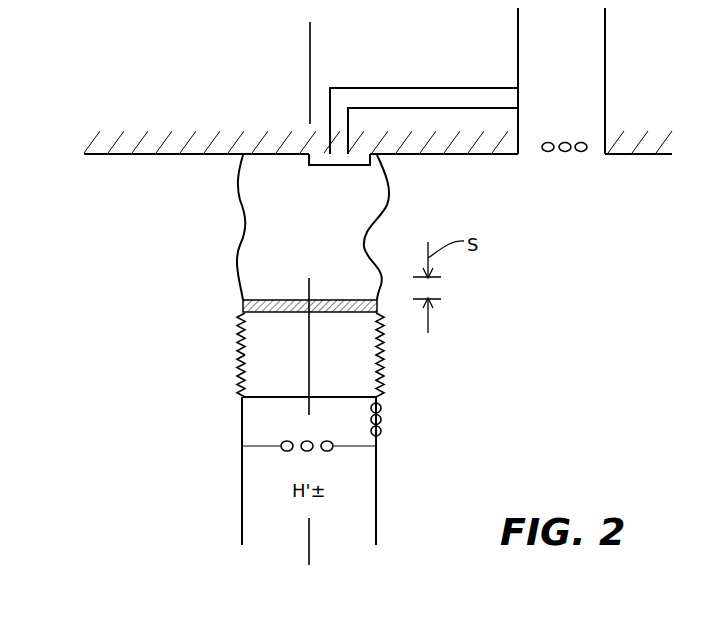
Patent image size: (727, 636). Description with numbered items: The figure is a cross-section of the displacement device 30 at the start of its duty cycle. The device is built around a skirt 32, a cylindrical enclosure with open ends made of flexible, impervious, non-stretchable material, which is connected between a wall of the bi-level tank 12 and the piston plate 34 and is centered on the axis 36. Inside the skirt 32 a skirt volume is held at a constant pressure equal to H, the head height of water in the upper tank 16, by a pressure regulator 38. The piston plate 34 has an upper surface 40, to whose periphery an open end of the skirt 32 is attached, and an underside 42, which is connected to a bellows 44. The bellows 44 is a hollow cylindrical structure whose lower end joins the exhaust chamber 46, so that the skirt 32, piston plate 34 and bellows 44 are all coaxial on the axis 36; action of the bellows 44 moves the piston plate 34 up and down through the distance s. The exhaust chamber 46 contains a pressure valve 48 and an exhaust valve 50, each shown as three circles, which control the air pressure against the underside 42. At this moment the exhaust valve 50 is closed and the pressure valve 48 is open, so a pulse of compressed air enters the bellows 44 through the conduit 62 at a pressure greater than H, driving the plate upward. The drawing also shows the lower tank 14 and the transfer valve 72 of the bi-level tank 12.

The bi-level tank 12 is at (182, 148).
The lower tank 14 is at (585, 248).
The upper tank 16 is at (571, 50).
The displacement device 30 is at (110, 260).
The skirt 32 is at (243, 222).
The piston plate 34 is at (243, 307).
The axis 36 is at (308, 65).
The pressure regulator 38 is at (340, 156).
The upper surface 40 is at (243, 283).
The underside 42 is at (340, 313).
The bellows 44 is at (243, 360).
The exhaust chamber 46 is at (262, 418).
The pressure valve 48 is at (310, 450).
The exhaust valve 50 is at (383, 421).
The conduit 62 is at (265, 512).
The transfer valve 72 is at (563, 152).